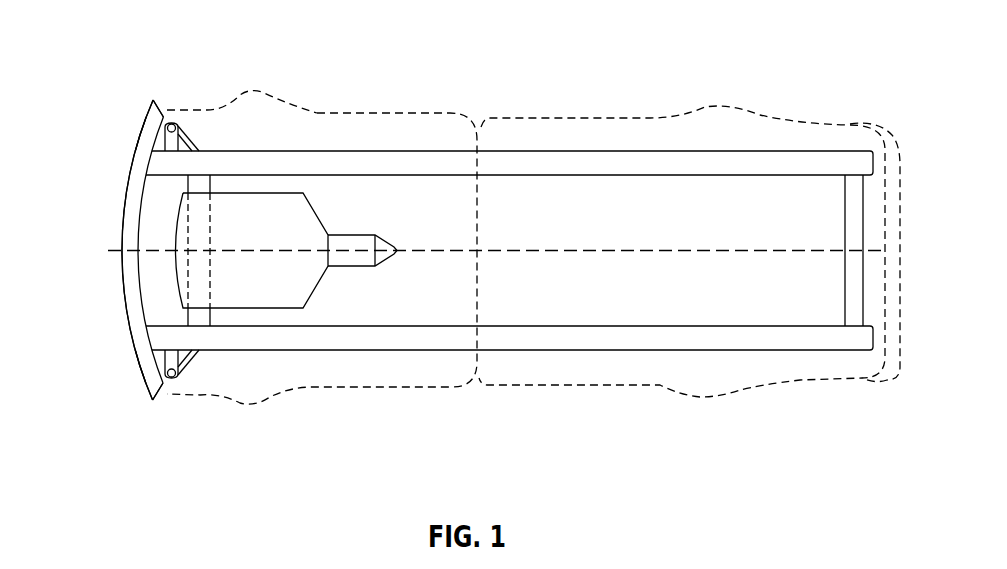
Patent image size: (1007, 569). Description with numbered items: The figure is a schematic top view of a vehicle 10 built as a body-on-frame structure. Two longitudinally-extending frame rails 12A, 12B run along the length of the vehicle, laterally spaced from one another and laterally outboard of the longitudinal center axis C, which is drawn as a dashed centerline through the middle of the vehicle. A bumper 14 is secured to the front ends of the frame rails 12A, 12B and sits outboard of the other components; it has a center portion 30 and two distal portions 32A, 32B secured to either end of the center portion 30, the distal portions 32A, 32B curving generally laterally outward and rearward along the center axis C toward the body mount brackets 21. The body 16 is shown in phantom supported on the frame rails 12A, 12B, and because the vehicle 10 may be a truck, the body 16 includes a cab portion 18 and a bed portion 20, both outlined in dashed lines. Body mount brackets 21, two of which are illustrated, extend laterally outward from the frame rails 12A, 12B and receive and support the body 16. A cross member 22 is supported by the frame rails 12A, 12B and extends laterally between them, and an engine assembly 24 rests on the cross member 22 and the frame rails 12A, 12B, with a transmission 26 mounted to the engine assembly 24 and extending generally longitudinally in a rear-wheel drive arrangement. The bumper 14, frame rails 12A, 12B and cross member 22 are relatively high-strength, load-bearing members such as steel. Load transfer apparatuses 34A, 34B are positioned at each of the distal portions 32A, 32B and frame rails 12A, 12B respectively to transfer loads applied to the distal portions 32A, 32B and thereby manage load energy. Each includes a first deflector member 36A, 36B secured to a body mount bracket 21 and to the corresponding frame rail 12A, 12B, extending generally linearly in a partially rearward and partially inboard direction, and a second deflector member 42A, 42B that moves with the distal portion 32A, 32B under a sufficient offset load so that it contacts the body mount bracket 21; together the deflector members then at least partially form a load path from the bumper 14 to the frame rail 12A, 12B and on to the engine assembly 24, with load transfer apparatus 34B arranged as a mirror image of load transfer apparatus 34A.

The vehicle 10 is at (545, 47).
The frame rail 12A is at (322, 351).
The frame rail 12B is at (430, 151).
The bumper 14 is at (124, 276).
The body 16 is at (265, 86).
The cab portion 18 is at (407, 390).
The bed portion 20 is at (587, 388).
The body mount bracket 21 is at (160, 137).
The cross member 22 is at (210, 323).
The engine assembly 24 is at (280, 219).
The transmission 26 is at (348, 233).
The center portion 30 is at (126, 222).
The distal portion 32A is at (140, 366).
The distal portion 32B is at (134, 141).
The load transfer apparatus 34A is at (211, 407).
The load transfer apparatus 34B is at (162, 72).
The first deflector member 36A is at (188, 357).
The first deflector member 36B is at (195, 144).
The second deflector member 42A is at (163, 386).
The second deflector member 42B is at (164, 117).
The longitudinal center axis C is at (725, 250).